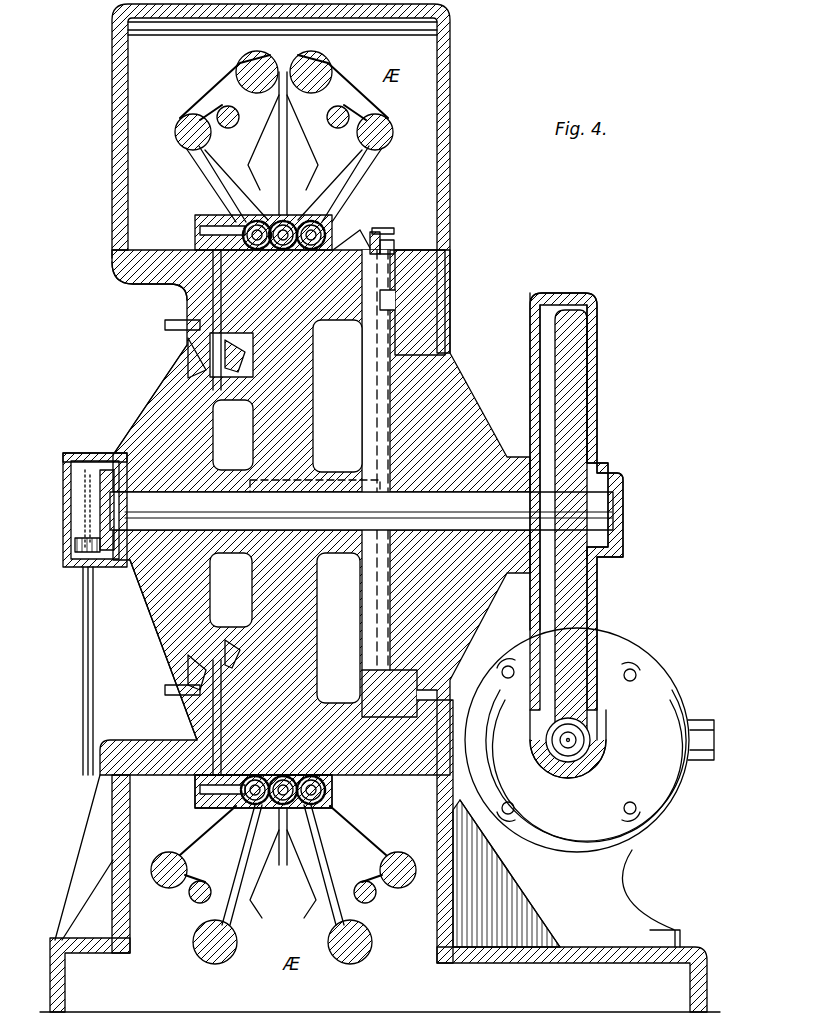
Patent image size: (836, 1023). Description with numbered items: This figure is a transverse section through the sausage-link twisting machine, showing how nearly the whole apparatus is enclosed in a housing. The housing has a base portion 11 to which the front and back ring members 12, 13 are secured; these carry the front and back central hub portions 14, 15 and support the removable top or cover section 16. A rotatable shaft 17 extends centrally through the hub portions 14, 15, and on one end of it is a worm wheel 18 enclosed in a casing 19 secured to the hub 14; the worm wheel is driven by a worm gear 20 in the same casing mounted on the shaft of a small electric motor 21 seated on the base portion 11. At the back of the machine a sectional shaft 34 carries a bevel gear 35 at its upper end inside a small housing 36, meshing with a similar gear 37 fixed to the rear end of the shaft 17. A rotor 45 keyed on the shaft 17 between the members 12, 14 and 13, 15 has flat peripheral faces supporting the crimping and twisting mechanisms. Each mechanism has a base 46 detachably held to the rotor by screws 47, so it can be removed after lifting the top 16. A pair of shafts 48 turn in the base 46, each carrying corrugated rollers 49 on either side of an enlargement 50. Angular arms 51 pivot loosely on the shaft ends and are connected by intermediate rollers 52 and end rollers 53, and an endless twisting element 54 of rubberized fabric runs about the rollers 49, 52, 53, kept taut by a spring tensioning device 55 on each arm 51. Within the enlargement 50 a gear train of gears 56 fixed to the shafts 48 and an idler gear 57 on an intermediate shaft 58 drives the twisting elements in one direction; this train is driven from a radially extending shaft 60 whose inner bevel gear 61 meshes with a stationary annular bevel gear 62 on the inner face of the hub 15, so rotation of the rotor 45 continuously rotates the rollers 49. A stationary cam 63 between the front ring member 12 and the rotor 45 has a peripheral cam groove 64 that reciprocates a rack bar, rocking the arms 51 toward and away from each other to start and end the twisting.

The base portion 11 is at (445, 962).
The front ring member 12 is at (282, 831).
The back ring member 13 is at (140, 740).
The front central hub portion 14 is at (452, 378).
The back central hub portion 15 is at (133, 437).
The top or cover section 16 is at (452, 140).
The rotatable shaft 17 is at (450, 500).
The worm wheel 18 is at (566, 434).
The casing 19 is at (598, 352).
The worm gear 20 is at (573, 755).
The electric motor 21 is at (640, 690).
The sectional shaft 34 is at (80, 648).
The bevel gear 35 is at (72, 547).
The small housing 36 is at (62, 512).
The bevel gear 37 is at (105, 452).
The rotor 45 is at (310, 400).
The base 46 is at (378, 245).
The screws 47 is at (408, 235).
The shafts 48 is at (256, 228).
The corrugated rollers 49 is at (312, 226).
The enlargement 50 is at (340, 247).
The angular arm 51 is at (200, 165).
The intermediate rollers 52 is at (176, 132).
The rollers 53 is at (240, 70).
The endless twisting element 54 is at (184, 150).
The spring tensioning device 55 is at (222, 110).
The gears 56 is at (215, 212).
The idler gear 57 is at (300, 180).
The intermediate shaft 58 is at (283, 865).
The radially extending shaft 60 is at (186, 297).
The bevel gear 61 is at (200, 368).
The stationary annular bevel gear 62 is at (216, 398).
The stationary cam 63 is at (432, 320).
The cam groove 64 is at (396, 242).